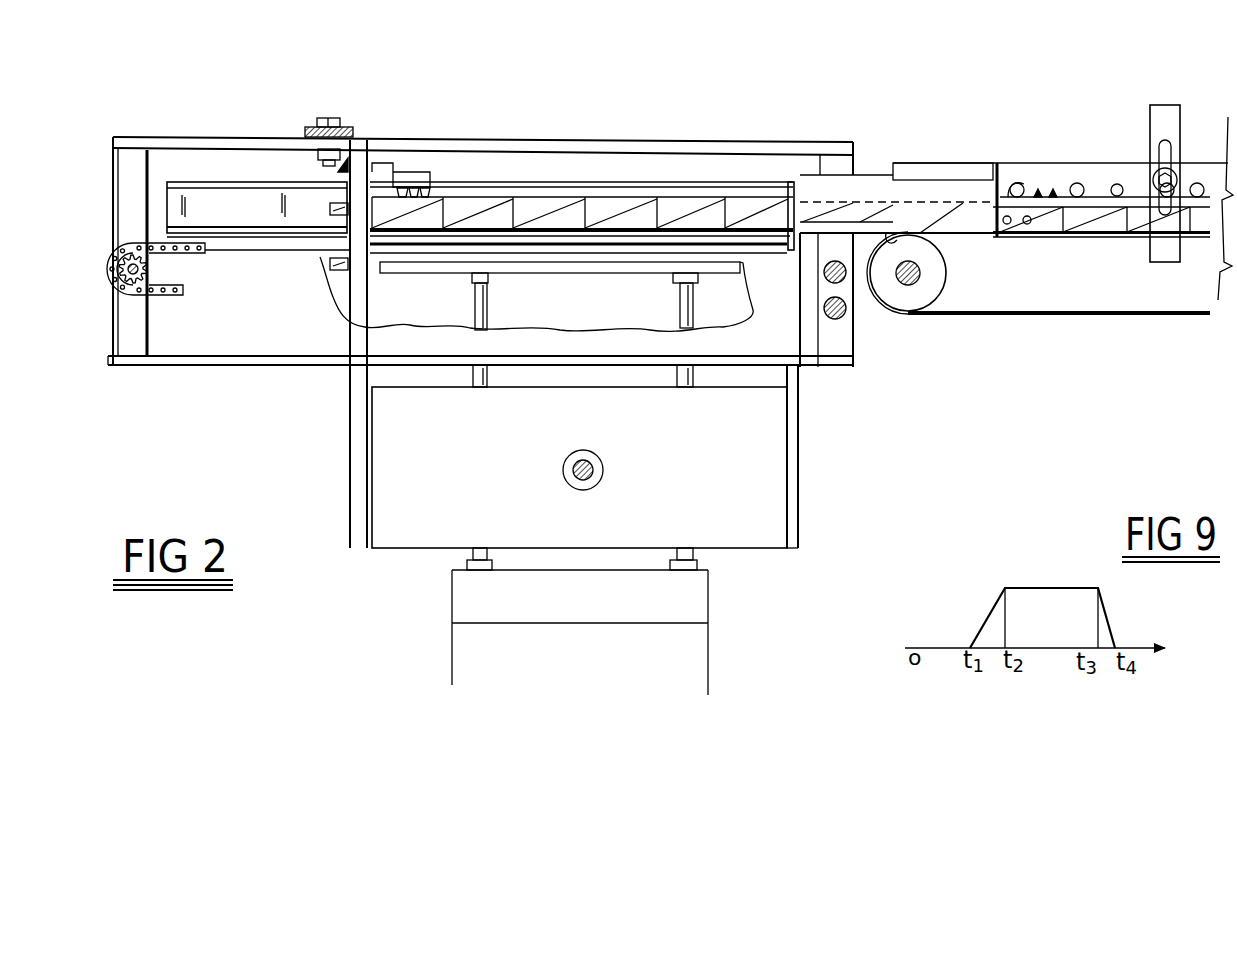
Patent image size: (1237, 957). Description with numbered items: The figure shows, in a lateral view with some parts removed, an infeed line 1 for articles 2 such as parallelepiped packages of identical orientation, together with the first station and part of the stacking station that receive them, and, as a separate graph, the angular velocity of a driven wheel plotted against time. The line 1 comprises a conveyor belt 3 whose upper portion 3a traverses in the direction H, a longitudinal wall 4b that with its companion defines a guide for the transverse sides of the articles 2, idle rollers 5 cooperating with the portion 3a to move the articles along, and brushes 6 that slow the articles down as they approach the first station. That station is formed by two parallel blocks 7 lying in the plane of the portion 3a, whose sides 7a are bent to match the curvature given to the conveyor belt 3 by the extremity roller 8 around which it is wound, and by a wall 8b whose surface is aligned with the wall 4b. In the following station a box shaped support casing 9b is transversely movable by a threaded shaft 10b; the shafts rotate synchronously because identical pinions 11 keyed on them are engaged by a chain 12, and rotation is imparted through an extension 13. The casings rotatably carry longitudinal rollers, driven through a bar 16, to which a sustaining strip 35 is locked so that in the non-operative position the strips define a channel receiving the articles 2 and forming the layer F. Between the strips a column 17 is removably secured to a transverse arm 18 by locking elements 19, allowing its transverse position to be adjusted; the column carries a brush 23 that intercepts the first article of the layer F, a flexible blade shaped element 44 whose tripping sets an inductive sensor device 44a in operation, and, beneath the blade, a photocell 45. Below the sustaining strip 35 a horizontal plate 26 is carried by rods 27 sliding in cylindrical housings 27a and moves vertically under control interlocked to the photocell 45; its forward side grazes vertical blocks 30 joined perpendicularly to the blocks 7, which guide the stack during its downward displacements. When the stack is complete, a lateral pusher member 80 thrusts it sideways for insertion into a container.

The line 1 is at (1098, 148).
The articles 2 is at (487, 207).
The conveyor belt 3 is at (979, 320).
The upper portion of the conveyor belt 3a is at (1013, 236).
The longitudinal wall 4b is at (1170, 218).
The idle rollers 5 is at (1075, 184).
The brushes 6 is at (1012, 186).
The blocks 7 is at (827, 236).
The sides of the blocks 7a is at (891, 236).
The extremity roller 8 is at (908, 290).
The wall 8b is at (933, 190).
The box shaped support casing 9b is at (672, 140).
The threaded shaft 10b is at (846, 312).
The pinions 11 is at (143, 257).
The chain 12 is at (177, 247).
The extension 13 is at (132, 274).
The bar 16 is at (833, 261).
The column 17 is at (353, 140).
The transverse arm 18 is at (308, 128).
The locking elements 19 is at (332, 118).
The brush 23 is at (413, 183).
The horizontal plate 26 is at (587, 262).
The rods 27 is at (477, 380).
The cylindrical housings 27a is at (478, 566).
The vertical blocks 30 is at (798, 477).
The sustaining strip 35 is at (237, 233).
The flexible blade shaped element 44 is at (373, 197).
The inductive sensor device 44a is at (333, 209).
The photocell 45 is at (330, 265).
The lateral pusher member 80 is at (707, 511).
The layer F is at (522, 183).
The direction H is at (1074, 256).